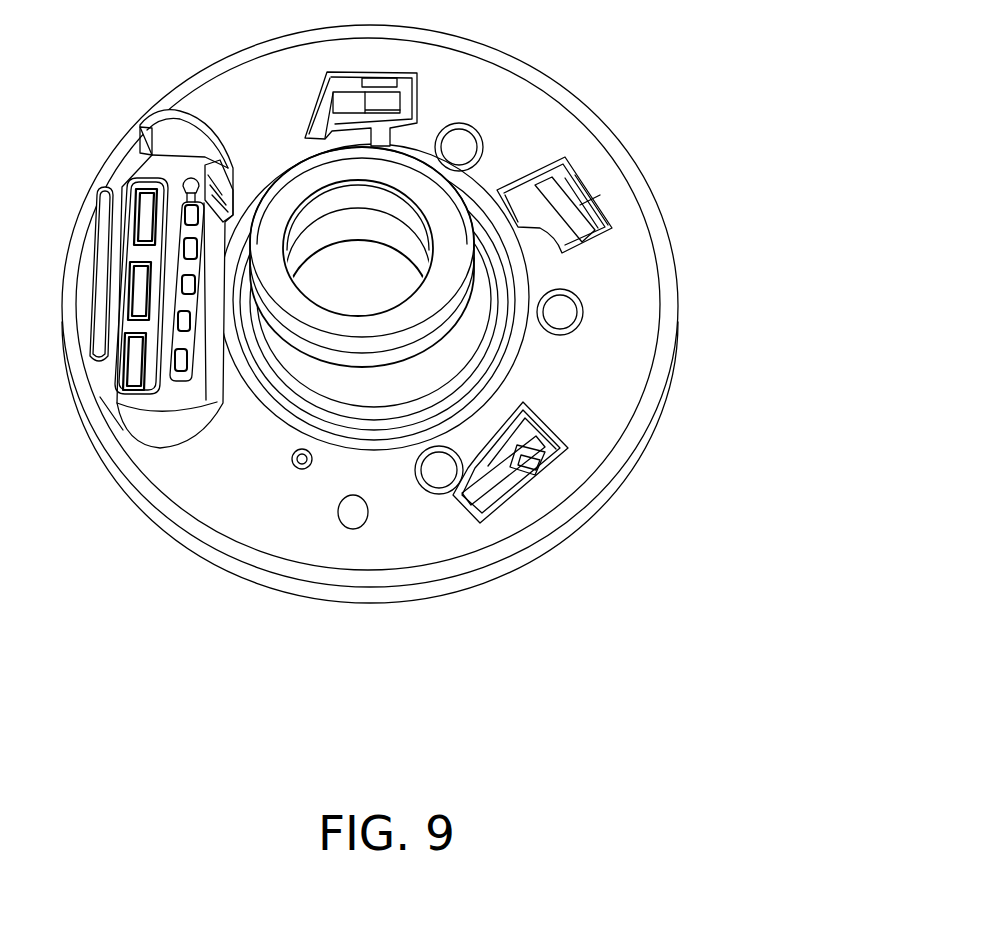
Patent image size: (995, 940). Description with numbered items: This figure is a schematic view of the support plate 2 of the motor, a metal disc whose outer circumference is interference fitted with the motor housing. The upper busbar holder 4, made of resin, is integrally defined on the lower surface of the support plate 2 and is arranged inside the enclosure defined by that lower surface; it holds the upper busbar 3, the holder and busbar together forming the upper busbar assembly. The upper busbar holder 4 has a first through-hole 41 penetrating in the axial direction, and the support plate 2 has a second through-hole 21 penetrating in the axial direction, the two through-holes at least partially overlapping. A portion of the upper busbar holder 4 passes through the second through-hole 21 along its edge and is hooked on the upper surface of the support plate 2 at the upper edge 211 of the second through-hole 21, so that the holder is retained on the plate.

The support plate 2 is at (511, 112).
The upper busbar 3 is at (577, 572).
The upper busbar holder 4 is at (478, 467).
The first through-hole 41 is at (495, 505).
The second through-hole 21 is at (517, 487).
The upper edge of the second through-hole 211 is at (533, 480).